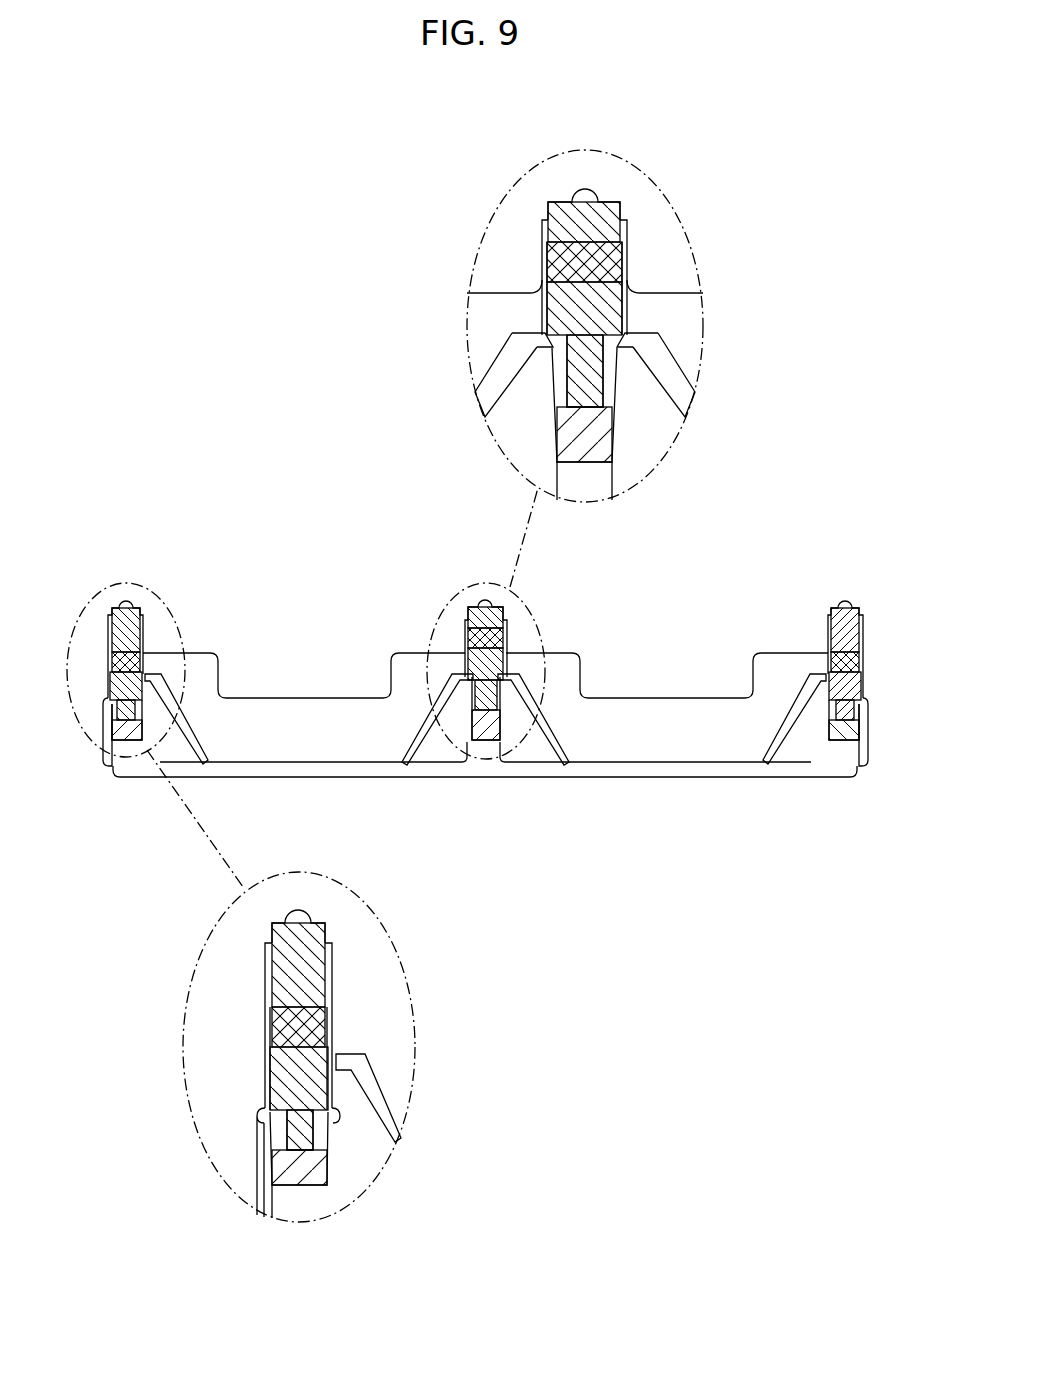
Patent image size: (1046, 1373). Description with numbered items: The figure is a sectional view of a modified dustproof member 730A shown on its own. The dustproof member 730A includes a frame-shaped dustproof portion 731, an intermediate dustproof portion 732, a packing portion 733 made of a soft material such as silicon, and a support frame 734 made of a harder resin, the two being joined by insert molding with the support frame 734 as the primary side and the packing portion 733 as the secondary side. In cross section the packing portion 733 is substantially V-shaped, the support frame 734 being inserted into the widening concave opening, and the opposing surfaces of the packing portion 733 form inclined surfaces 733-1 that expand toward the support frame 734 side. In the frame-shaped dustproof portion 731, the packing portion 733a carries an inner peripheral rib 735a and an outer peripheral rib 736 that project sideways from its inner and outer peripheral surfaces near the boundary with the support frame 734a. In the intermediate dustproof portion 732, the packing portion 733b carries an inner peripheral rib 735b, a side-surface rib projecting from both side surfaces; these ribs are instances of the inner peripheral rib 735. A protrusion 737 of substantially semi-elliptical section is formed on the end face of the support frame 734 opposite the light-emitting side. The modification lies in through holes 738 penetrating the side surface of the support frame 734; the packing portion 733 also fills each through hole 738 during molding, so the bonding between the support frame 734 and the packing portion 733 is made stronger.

The dustproof member 730A is at (698, 586).
The frame-shaped dustproof portion 731 is at (307, 713).
The intermediate dustproof portion 732 is at (652, 217).
The packing portion 733 is at (443, 804).
The packing portion 733a is at (318, 1172).
The packing portion 733b is at (562, 445).
The inclined surface 733-1 is at (560, 395).
The support frame 734 is at (446, 665).
The support frame 734a is at (333, 972).
The inner peripheral rib 735 is at (464, 716).
The inner peripheral rib 735a is at (340, 1114).
The inner peripheral rib 735b is at (523, 350).
The outer peripheral rib 736 is at (258, 1112).
The protrusion 737 is at (588, 196).
The through hole 738 is at (608, 243).